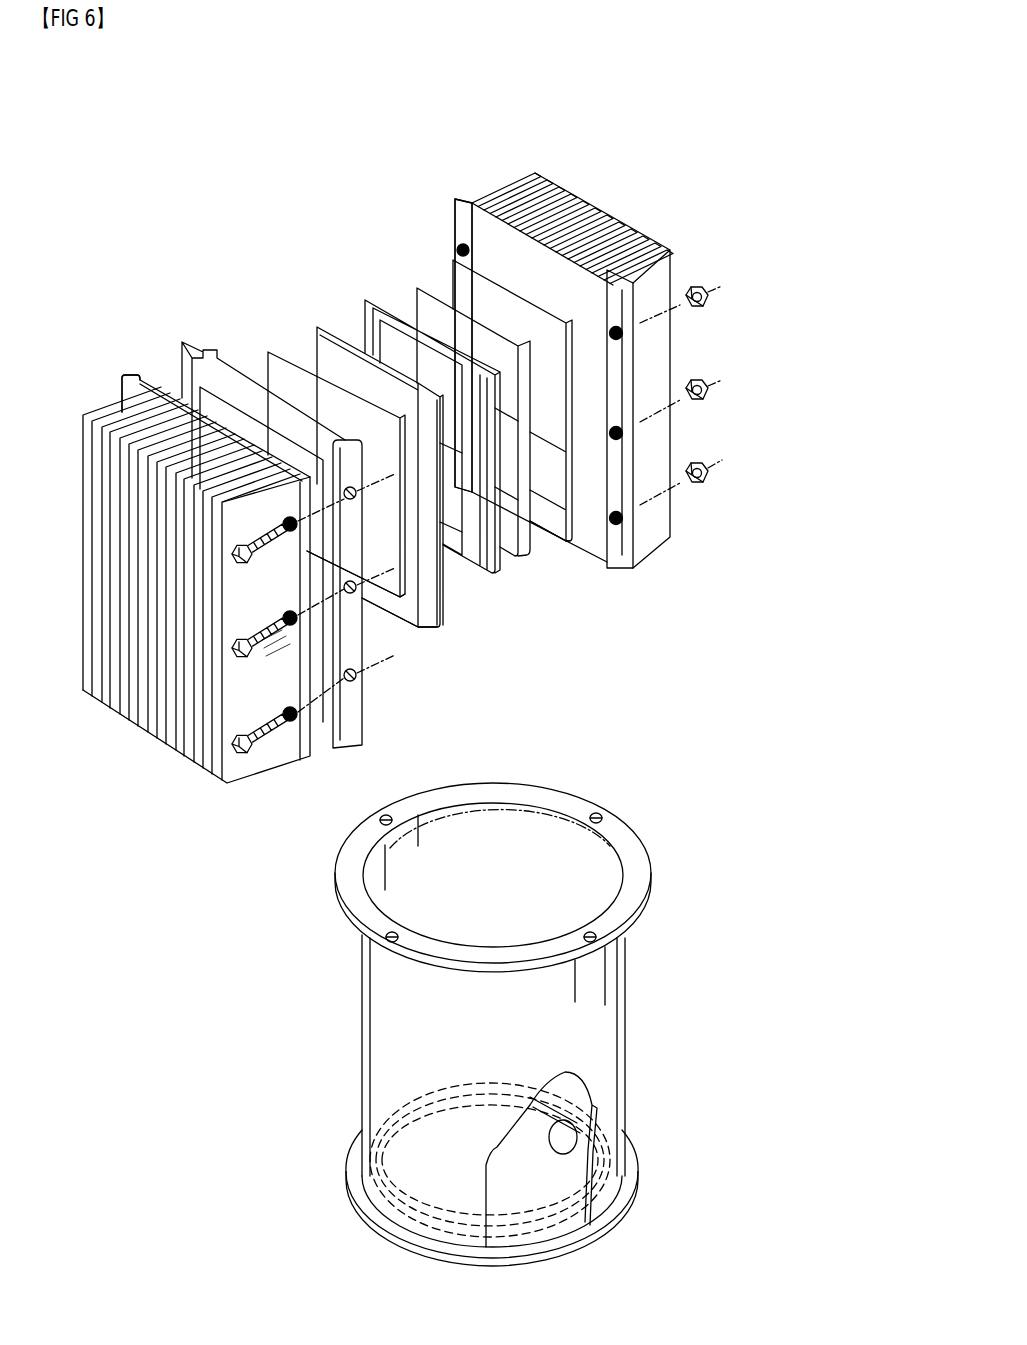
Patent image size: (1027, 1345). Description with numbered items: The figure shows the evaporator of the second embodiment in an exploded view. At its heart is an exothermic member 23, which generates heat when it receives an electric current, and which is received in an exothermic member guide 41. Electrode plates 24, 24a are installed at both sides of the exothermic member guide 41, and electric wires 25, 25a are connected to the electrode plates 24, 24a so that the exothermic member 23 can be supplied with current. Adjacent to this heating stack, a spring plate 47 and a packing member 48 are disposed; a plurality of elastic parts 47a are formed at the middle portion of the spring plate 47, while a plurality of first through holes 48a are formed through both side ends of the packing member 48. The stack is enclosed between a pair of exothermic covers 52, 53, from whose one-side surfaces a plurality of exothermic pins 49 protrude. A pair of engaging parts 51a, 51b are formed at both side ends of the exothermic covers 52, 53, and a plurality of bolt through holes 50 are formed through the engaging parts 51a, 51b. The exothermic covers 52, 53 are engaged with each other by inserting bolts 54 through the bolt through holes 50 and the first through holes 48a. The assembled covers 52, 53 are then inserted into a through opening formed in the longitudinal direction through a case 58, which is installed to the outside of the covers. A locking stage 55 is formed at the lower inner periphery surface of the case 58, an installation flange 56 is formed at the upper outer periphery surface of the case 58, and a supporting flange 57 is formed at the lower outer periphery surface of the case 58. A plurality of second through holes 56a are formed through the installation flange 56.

The exothermic member 23 is at (418, 288).
The electrode plate 24 is at (322, 355).
The electrode plate 24a is at (460, 280).
The electric wire 25 is at (433, 627).
The electric wire 25a is at (555, 544).
The exothermic member guide 41 is at (365, 300).
The spring plate 47 is at (402, 612).
The elastic parts 47a is at (430, 600).
The packing member 48 is at (210, 345).
The first through holes 48a is at (352, 690).
The exothermic pins 49 is at (102, 398).
The bolt through holes 50 is at (290, 725).
The engaging part 51a is at (130, 376).
The engaging part 51b is at (333, 746).
The exothermic cover 52 is at (178, 725).
The exothermic cover 53 is at (606, 208).
The bolts 54 is at (243, 760).
The locking stage 55 is at (600, 1140).
The installation flange 56 is at (640, 855).
The second through holes 56a is at (597, 812).
The supporting flange 57 is at (345, 1162).
The case 58 is at (353, 1022).